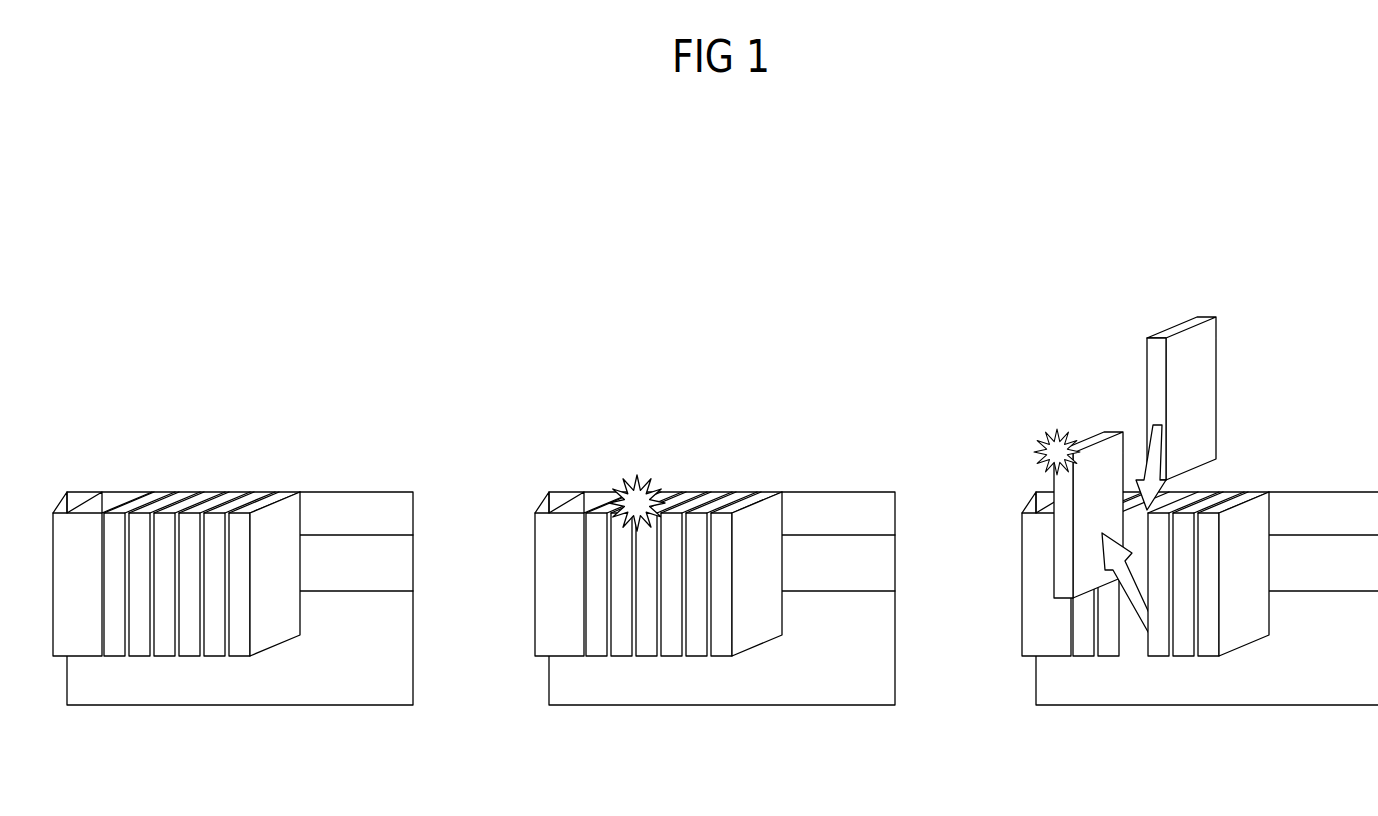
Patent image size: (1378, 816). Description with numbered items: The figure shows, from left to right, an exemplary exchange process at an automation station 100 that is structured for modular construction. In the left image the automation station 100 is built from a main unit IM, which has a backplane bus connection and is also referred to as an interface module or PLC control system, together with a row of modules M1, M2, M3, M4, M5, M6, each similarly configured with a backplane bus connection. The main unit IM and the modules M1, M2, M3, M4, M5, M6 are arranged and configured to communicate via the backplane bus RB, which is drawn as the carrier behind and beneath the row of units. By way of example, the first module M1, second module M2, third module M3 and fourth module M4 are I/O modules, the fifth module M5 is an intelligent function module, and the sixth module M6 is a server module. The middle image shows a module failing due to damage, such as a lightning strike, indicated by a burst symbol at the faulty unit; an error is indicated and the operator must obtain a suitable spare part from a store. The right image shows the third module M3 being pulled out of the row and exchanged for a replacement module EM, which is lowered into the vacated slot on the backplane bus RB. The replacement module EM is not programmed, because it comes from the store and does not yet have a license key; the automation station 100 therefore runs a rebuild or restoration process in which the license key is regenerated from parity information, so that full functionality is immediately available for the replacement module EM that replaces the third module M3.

The automation station 100 is at (126, 357).
The backplane bus RB is at (370, 492).
The main unit IM is at (105, 500).
The first module M1 is at (153, 492).
The second module M2 is at (175, 493).
The third module M3 is at (202, 493).
The fourth module M4 is at (227, 493).
The fifth module M5 is at (253, 492).
The sixth module M6 is at (278, 493).
The replacement module EM is at (1178, 322).